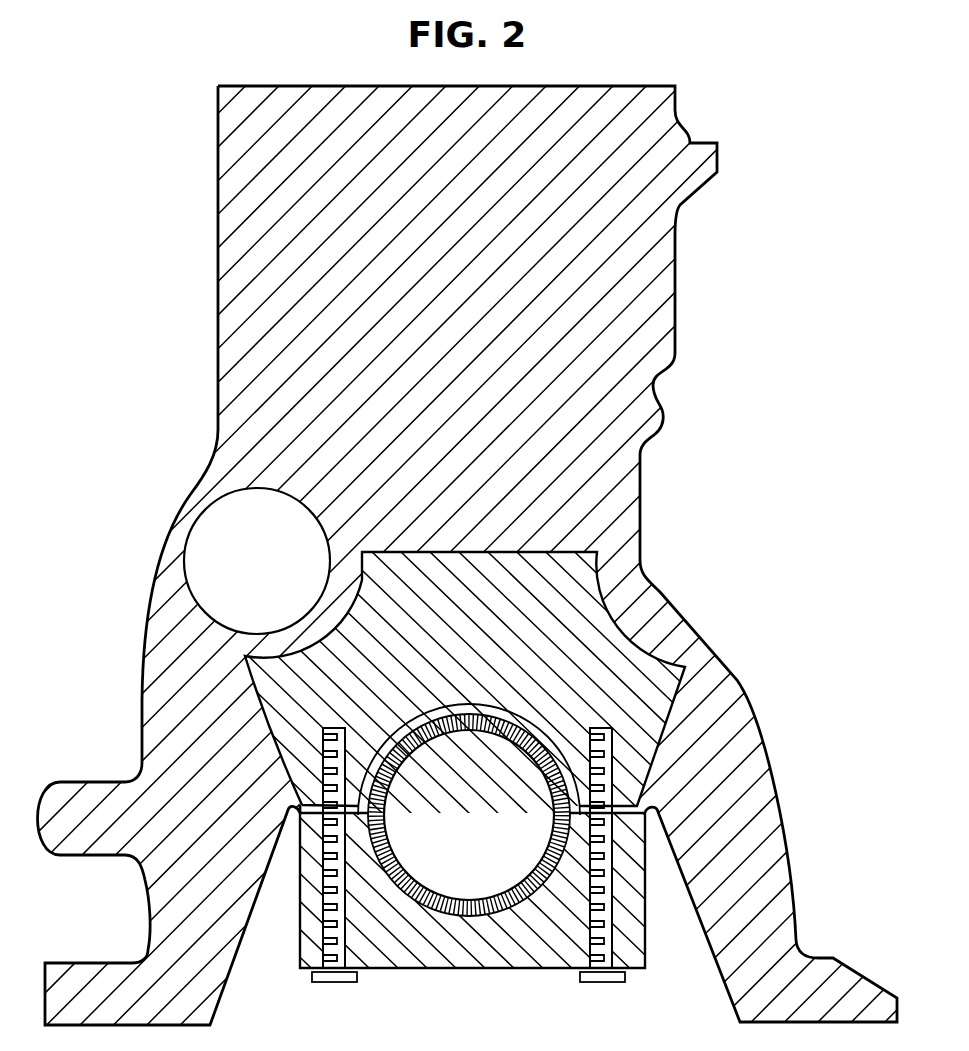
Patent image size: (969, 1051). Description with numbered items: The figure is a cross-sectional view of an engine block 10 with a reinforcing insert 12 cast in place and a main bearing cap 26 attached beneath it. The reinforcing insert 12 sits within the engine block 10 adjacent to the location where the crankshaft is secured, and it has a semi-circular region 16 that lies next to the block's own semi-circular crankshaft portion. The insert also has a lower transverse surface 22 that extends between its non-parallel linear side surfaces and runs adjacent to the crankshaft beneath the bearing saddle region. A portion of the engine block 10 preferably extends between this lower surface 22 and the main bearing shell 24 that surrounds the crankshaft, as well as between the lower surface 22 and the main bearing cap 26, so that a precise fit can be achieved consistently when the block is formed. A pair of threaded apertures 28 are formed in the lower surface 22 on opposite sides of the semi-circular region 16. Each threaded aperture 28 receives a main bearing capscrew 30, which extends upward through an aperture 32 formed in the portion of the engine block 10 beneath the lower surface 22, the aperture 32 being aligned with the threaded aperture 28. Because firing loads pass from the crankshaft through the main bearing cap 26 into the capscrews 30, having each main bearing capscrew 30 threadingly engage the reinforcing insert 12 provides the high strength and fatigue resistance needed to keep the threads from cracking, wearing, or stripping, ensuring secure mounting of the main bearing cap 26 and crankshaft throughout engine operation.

The engine block 10 is at (253, 160).
The reinforcing insert 12 is at (591, 562).
The semi-circular region 16 is at (517, 707).
The lower transverse surface 22 is at (300, 812).
The main bearing shell 24 is at (441, 906).
The main bearing cap 26 is at (503, 956).
The threaded apertures 28 is at (597, 738).
The main bearing capscrew 30 is at (598, 983).
The aperture 32 is at (612, 925).